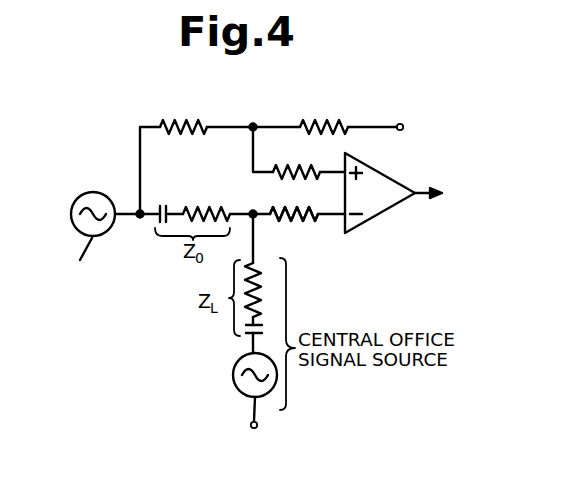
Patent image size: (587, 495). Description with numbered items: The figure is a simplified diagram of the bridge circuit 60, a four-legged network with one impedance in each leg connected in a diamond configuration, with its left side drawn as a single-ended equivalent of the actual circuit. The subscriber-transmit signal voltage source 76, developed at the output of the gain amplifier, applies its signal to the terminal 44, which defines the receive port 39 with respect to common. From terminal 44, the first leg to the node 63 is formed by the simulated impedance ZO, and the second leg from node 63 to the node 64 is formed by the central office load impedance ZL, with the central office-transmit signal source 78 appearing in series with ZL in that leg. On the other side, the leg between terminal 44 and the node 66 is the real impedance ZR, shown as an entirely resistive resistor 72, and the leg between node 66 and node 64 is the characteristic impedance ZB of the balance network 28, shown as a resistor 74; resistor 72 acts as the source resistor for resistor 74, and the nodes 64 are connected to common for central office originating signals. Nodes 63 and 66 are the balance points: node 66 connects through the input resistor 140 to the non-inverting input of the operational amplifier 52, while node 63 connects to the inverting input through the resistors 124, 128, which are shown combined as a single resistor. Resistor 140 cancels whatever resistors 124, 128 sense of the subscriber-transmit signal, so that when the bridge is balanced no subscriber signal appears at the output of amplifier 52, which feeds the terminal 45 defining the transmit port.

The bridge circuit 60 is at (104, 126).
The resistor 72 is at (180, 133).
The resistor 74 is at (322, 136).
The input resistor 140 is at (313, 176).
The node 66 is at (253, 124).
The node 63 is at (253, 211).
The receive port 39 is at (133, 203).
The balance network 28 is at (358, 118).
The node 64 is at (403, 124).
The subscriber-transmit signal voltage source 76 is at (97, 192).
The terminal 44 is at (140, 217).
The resistor 124 is at (293, 220).
The resistor 128 is at (312, 241).
The operational amplifier 52 is at (380, 213).
The terminal 45 is at (455, 192).
The central office-transmit signal source 78 is at (233, 383).